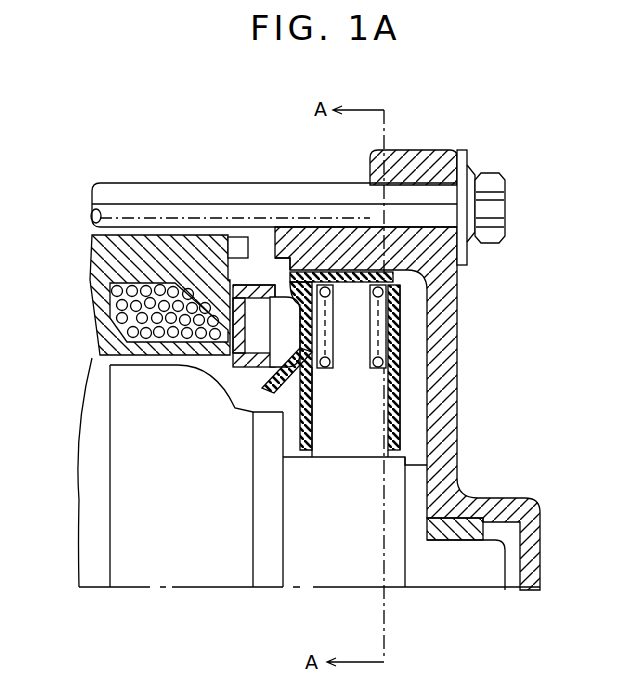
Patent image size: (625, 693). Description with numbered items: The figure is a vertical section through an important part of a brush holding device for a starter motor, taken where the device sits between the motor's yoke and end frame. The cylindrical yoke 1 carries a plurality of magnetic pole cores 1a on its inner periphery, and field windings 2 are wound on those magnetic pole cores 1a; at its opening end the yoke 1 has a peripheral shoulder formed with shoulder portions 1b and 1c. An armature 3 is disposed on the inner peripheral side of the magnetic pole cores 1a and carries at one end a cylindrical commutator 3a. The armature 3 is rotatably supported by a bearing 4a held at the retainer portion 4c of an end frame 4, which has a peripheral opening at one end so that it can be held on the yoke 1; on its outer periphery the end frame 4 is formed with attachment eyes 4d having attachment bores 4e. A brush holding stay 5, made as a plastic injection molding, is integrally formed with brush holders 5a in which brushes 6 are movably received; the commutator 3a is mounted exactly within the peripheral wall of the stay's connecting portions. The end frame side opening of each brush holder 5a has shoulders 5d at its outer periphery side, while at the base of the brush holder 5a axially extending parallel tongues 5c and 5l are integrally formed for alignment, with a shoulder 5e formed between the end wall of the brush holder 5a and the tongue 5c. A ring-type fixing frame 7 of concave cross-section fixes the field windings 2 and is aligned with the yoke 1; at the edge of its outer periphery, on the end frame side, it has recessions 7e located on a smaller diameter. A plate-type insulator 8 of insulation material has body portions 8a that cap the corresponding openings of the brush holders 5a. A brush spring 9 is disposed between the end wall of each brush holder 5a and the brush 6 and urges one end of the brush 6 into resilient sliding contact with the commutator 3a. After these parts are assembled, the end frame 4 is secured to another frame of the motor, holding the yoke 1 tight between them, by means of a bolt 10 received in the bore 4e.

The yoke 1 is at (115, 247).
The magnetic pole cores 1a is at (100, 300).
The peripheral shoulder portion 1b is at (283, 263).
The peripheral shoulder portion 1c is at (233, 249).
The field windings 2 is at (148, 300).
The armature 3 is at (135, 550).
The commutator 3a is at (383, 475).
The end frame 4 is at (443, 337).
The bearing 4a is at (455, 527).
The retainer portion 4c is at (510, 513).
The attachment eyes 4d is at (440, 162).
The attachment bores 4e is at (412, 178).
The brush holding stay 5 is at (310, 436).
The brush holders 5a is at (321, 272).
The tongue 5c is at (245, 292).
The shoulders 5d is at (402, 342).
The shoulder 5e is at (298, 268).
The tongue 5l is at (256, 378).
The brushes 6 is at (363, 412).
The fixing frame 7 is at (208, 267).
The recessions 7e is at (265, 290).
The insulator 8 is at (388, 393).
The body portions 8a is at (394, 309).
The brush spring 9 is at (452, 270).
The bolt 10 is at (494, 203).